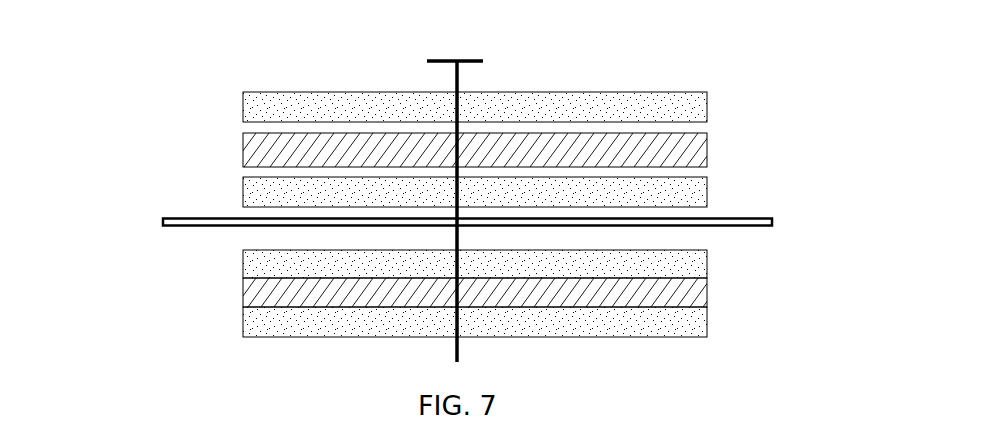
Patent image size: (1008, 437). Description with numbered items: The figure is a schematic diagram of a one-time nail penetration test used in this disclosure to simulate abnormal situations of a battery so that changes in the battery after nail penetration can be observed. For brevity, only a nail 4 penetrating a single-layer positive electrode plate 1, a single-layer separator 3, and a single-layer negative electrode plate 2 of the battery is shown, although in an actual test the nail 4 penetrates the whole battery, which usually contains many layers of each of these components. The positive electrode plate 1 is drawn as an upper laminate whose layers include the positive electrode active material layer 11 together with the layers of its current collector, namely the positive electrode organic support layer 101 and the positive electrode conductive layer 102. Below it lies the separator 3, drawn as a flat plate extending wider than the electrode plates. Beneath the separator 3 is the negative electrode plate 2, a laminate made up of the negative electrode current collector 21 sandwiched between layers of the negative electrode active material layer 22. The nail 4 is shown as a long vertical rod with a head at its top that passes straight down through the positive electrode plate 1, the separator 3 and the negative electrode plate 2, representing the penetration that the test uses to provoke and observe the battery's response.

The positive electrode plate 1 is at (461, 127).
The positive electrode active material layer 11 is at (683, 108).
The positive electrode organic support layer 101 is at (243, 153).
The positive electrode conductive layer 102 is at (683, 128).
The negative electrode plate 2 is at (459, 290).
The negative electrode current collector 21 is at (243, 290).
The negative electrode active material layer 22 is at (710, 260).
The separator 3 is at (215, 218).
The nail 4 is at (455, 80).